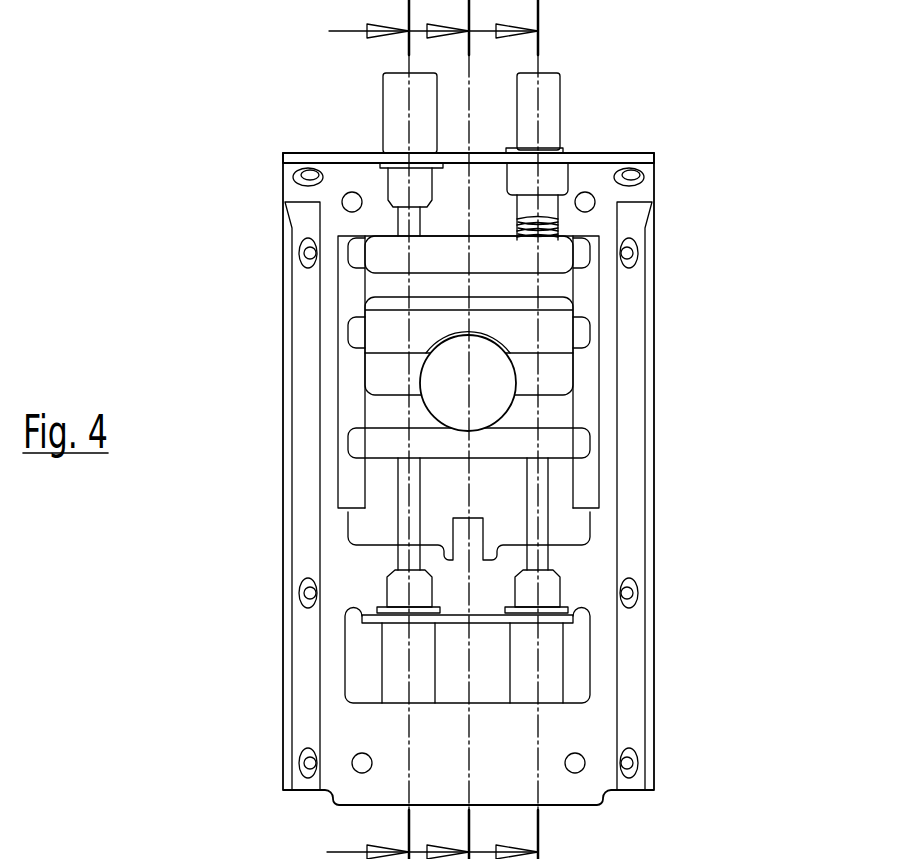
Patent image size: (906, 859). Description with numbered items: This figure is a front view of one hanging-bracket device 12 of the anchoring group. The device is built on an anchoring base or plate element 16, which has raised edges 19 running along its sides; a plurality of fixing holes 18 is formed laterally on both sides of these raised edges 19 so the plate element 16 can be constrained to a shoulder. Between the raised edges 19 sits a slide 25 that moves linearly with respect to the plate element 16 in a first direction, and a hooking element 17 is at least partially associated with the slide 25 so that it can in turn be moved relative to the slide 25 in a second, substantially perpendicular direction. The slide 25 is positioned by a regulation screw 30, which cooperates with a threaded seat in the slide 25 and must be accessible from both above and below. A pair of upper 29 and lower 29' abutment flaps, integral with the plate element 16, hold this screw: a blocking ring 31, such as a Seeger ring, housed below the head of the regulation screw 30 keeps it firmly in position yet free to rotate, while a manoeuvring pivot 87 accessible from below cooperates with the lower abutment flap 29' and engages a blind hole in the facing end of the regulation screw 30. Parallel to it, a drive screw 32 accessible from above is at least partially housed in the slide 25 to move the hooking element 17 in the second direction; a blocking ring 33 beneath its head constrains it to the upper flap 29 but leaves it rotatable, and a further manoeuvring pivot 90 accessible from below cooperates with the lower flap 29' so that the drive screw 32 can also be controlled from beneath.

The hanging-bracket device 12 is at (231, 118).
The plate element 16 is at (393, 745).
The hooking element 17 is at (462, 398).
The fixing holes 18 is at (300, 253).
The raised edges 19 is at (303, 408).
The slide 25 is at (344, 378).
The upper abutment flap 29 is at (398, 142).
The lower abutment flap 29' is at (351, 661).
The regulation screw 30 is at (581, 118).
The blocking ring 31 is at (567, 150).
The drive screw 32 is at (362, 118).
The blocking ring 33 is at (380, 165).
The manoeuvring pivot 87 is at (542, 527).
The further manoeuvring pivot 90 is at (403, 527).